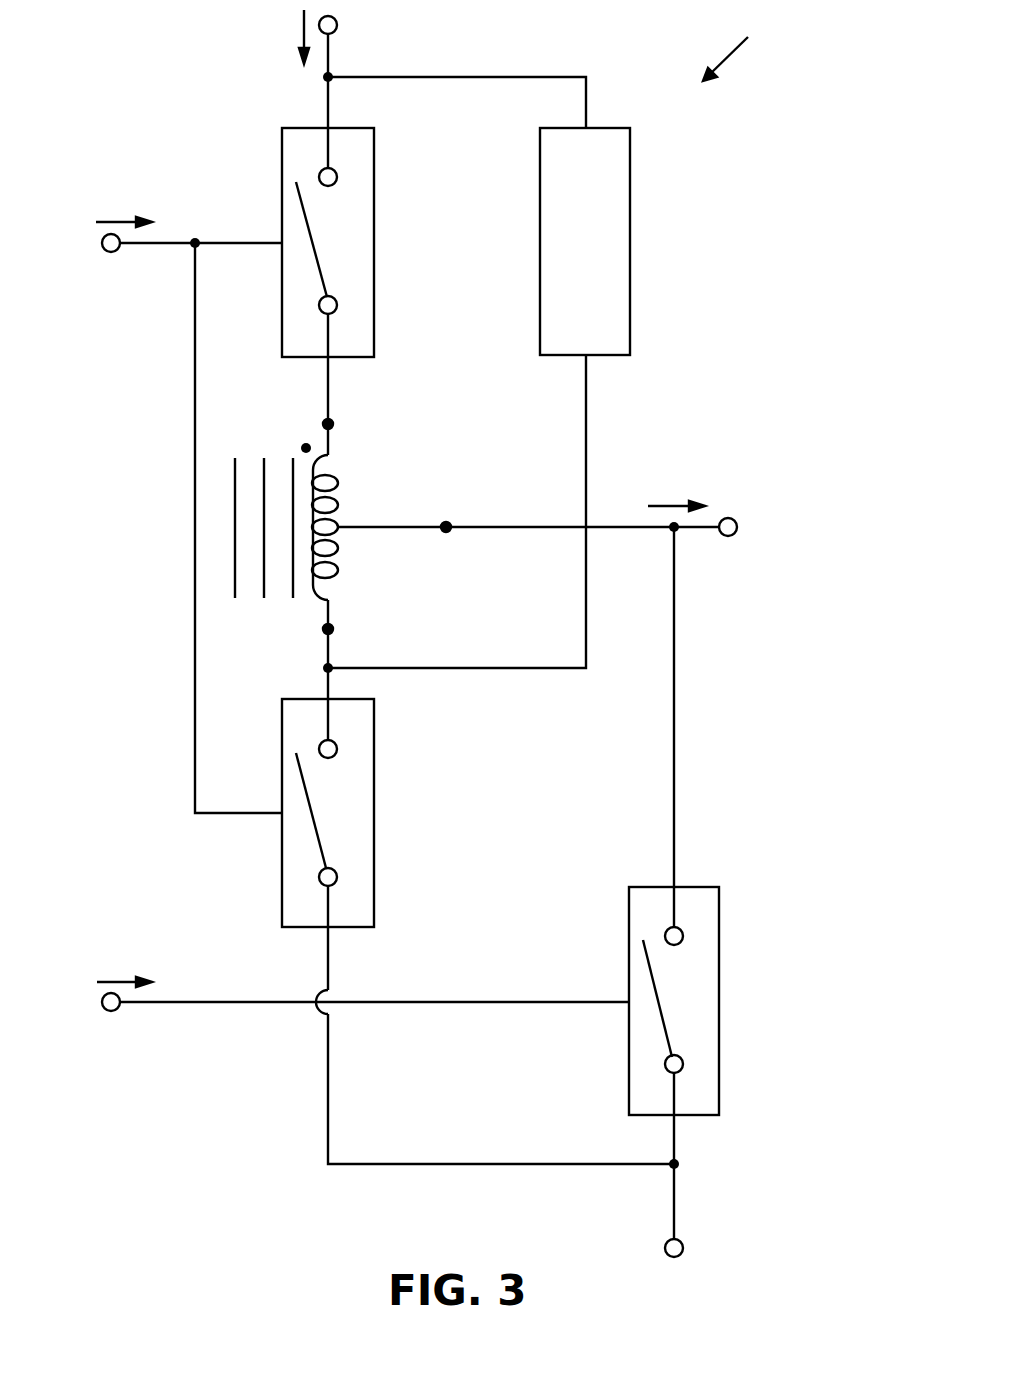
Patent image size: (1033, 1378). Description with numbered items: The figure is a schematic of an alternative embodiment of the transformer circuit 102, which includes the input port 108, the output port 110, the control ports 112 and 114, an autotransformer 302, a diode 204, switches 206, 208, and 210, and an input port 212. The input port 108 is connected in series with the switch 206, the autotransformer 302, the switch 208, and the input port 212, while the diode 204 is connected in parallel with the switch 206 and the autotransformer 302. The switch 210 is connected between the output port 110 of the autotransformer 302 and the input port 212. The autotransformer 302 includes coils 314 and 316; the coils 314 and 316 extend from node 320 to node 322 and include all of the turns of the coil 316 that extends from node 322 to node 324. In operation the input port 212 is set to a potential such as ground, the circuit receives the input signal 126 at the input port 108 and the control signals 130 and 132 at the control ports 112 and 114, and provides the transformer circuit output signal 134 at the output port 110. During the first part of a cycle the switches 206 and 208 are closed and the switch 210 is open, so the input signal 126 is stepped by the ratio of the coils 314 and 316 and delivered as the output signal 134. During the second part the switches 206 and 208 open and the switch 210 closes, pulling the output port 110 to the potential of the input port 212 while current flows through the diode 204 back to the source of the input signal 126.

The transformer circuit 102 is at (738, 44).
The input port 108 is at (338, 24).
The output port 110 is at (728, 536).
The control port 112 is at (111, 252).
The control port 114 is at (111, 1011).
The input signal 126 is at (300, 40).
The control signal 130 is at (129, 220).
The control signal 132 is at (127, 980).
The transformer circuit output signal 134 is at (680, 503).
The diode 204 is at (632, 240).
The switch 206 is at (376, 240).
The switch 208 is at (376, 813).
The switch 210 is at (721, 999).
The input port 212 is at (684, 1248).
The autotransformer 302 is at (237, 472).
The coil 314 is at (340, 483).
The coil 316 is at (340, 572).
The node 320 is at (334, 424).
The node 322 is at (334, 629).
The node 324 is at (446, 521).